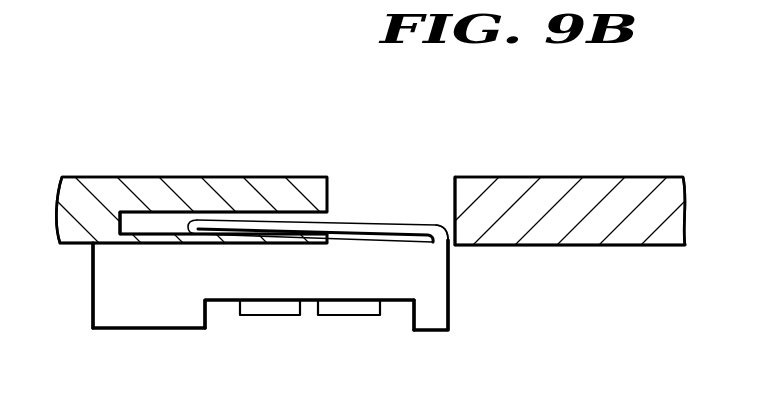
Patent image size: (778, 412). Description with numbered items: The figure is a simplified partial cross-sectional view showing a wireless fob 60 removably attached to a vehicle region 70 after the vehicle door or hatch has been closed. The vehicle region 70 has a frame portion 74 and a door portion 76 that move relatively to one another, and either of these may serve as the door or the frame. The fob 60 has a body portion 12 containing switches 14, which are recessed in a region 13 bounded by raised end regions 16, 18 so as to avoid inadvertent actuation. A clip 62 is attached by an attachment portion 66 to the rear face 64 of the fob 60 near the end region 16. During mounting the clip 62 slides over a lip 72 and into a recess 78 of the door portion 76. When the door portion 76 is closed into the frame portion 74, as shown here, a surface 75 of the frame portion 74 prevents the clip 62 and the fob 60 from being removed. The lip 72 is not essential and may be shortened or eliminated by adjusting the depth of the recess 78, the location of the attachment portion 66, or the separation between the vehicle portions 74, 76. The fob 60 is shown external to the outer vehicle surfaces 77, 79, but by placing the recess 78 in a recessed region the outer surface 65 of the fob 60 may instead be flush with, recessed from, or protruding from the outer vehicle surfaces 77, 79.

The vehicle region 70 is at (240, 86).
The door portion 76 is at (229, 189).
The recess 78 is at (137, 222).
The rear face 64 is at (160, 247).
The outer vehicle surface 79 is at (74, 246).
The frame portion 74 is at (600, 188).
The surface 75 is at (454, 192).
The outer vehicle surface 77 is at (624, 247).
The wireless fob 60 is at (516, 284).
The clip 62 is at (372, 223).
The lip 72 is at (365, 241).
The attachment portion 66 is at (432, 228).
The raised end region 18 is at (93, 313).
The outer surface 65 is at (155, 331).
The body portion 12 is at (228, 274).
The switches 14 is at (266, 320).
The recessed region 13 is at (396, 307).
The raised end region 16 is at (448, 309).